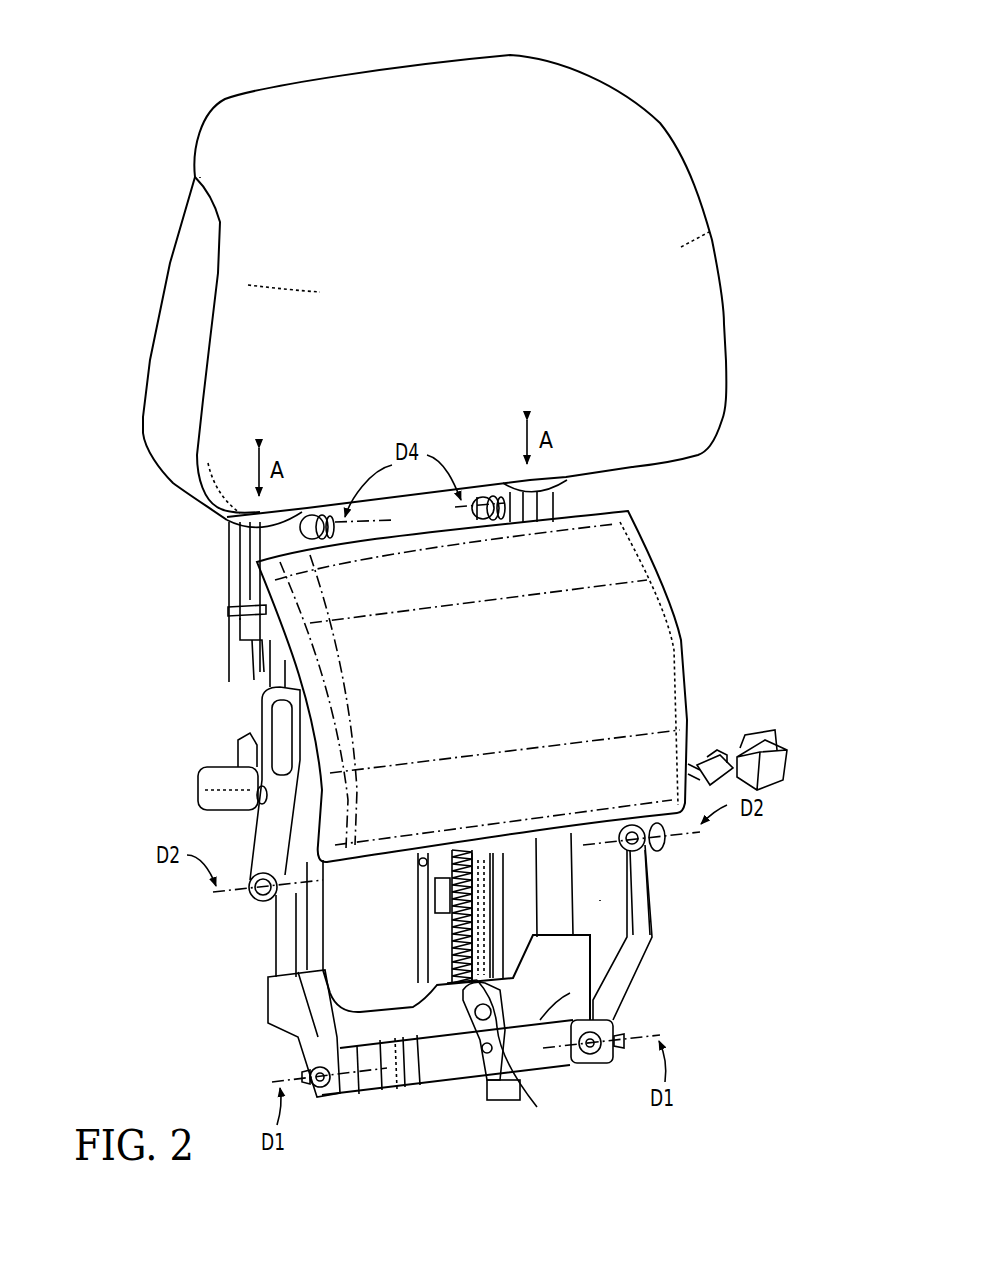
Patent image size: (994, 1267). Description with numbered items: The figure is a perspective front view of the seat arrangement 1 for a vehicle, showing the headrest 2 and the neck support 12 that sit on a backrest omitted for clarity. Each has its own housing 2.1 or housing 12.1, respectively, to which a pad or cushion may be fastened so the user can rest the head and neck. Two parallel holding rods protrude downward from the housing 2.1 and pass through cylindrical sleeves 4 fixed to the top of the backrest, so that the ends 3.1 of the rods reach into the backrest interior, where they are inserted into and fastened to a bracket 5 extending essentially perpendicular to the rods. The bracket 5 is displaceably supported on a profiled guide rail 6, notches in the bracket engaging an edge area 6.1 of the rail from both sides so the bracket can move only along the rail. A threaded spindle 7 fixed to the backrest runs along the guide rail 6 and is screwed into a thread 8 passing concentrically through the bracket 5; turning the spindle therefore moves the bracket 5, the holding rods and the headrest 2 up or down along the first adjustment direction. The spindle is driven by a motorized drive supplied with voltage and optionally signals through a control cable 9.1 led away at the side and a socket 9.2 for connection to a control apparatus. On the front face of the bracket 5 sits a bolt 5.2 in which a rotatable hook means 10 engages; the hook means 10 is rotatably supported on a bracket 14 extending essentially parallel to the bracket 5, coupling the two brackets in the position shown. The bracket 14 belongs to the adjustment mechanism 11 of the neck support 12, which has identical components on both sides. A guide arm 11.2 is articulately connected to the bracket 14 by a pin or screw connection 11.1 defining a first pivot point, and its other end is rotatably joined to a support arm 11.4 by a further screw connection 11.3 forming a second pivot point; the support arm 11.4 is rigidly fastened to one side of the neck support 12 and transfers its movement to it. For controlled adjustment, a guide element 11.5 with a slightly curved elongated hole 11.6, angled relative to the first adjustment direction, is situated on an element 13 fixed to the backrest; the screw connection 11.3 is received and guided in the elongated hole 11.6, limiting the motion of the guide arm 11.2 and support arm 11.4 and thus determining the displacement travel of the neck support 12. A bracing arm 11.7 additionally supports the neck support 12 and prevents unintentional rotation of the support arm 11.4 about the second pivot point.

The seat arrangement 1 is at (712, 117).
The headrest 2 is at (320, 98).
The housing 2.1 is at (180, 280).
The ends of the holding rods 3.1 is at (307, 953).
The cylindrical sleeves 4 is at (250, 540).
The bracket 5 is at (403, 1035).
The bolt 5.2 is at (523, 1080).
The guide rail 6 is at (440, 867).
The edge area of the guide rail 6.1 is at (424, 895).
The threaded spindle 7 is at (460, 937).
The thread 8 is at (453, 980).
The control cable 9.1 is at (693, 765).
The socket 9.2 is at (772, 774).
The hook means 10 is at (465, 1100).
The adjustment mechanism 11 is at (681, 890).
The screw connection 11.1 is at (309, 1075).
The guide arm 11.2 is at (298, 1002).
The further screw connection 11.3 is at (258, 895).
The support arm 11.4 is at (300, 850).
The guide element 11.5 is at (258, 792).
The elongated hole 11.6 is at (250, 717).
The bracing arm 11.7 is at (319, 545).
The neck support 12 is at (647, 605).
The housing 12.1 is at (275, 605).
The element fixed to the backrest 13 is at (215, 760).
The bracket 14 is at (362, 1084).